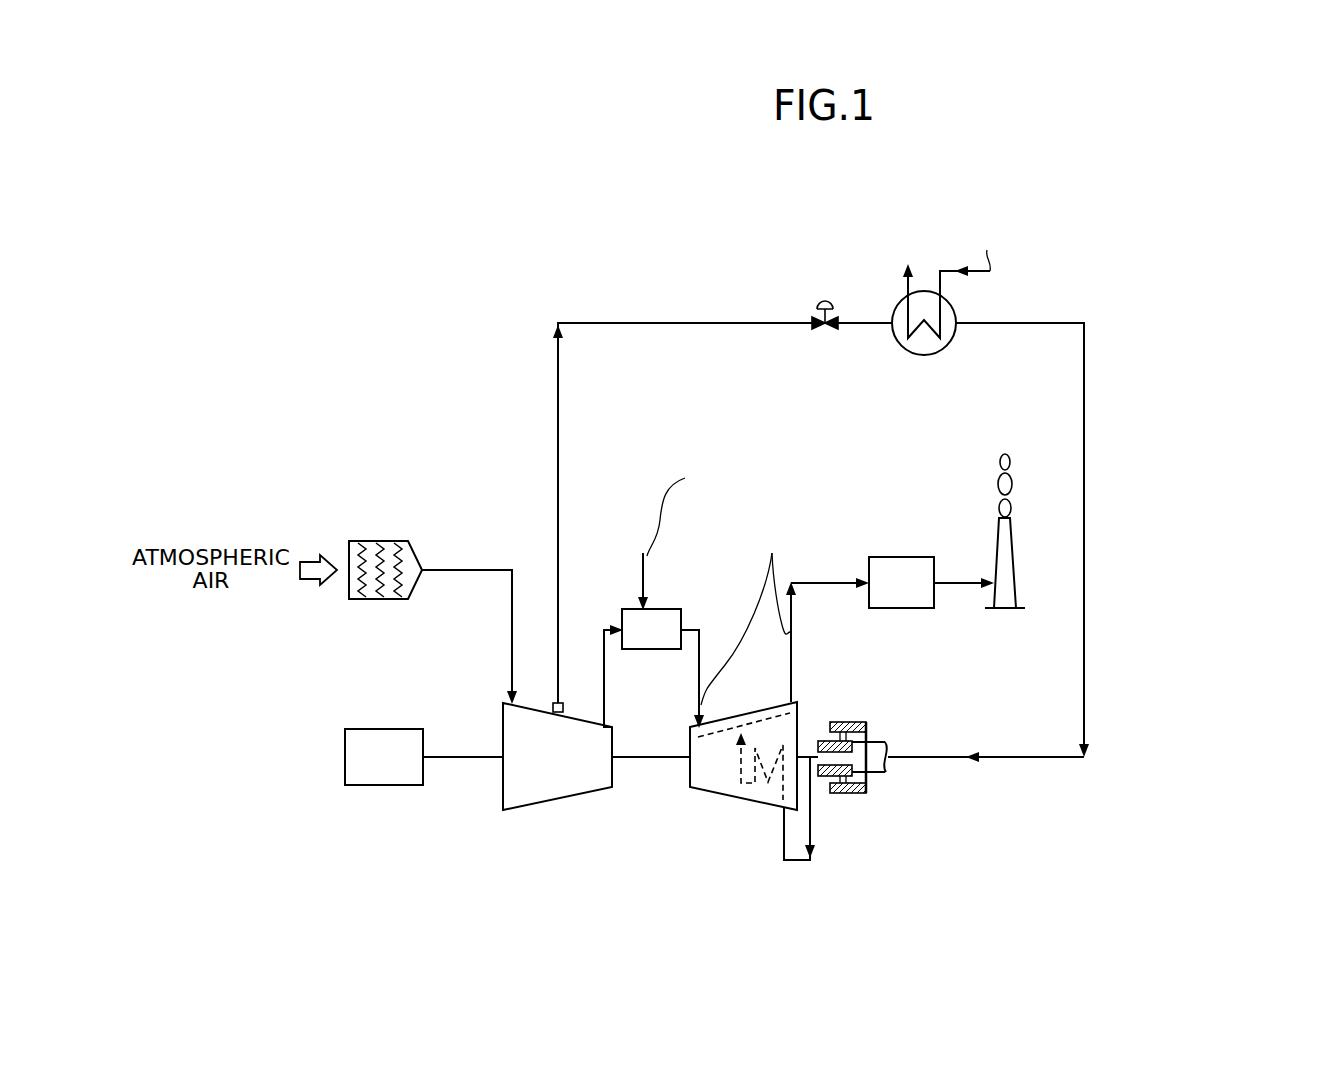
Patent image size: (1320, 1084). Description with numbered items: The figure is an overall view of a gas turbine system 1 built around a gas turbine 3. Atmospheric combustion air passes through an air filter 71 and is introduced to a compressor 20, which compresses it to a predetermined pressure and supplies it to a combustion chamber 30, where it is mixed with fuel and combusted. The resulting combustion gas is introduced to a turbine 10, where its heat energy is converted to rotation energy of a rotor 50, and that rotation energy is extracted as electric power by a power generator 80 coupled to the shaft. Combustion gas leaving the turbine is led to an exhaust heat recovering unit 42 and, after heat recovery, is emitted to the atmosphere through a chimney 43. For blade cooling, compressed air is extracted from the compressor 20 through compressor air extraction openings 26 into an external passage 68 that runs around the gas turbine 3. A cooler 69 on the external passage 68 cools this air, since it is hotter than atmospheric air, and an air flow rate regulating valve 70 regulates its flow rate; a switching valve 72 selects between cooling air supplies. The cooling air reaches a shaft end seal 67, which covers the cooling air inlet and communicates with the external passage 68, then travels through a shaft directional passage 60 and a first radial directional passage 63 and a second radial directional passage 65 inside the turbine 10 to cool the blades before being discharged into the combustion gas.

The gas turbine system 1 is at (1212, 218).
The gas turbine 3 is at (642, 705).
The turbine 10 is at (713, 792).
The compressor 20 is at (503, 710).
The compressor air extraction openings 26 is at (563, 705).
The combustion chamber 30 is at (663, 608).
The exhaust heat recovering unit 42 is at (903, 557).
The chimney 43 is at (1013, 565).
The rotor 50 is at (852, 758).
The shaft directional passage 60 is at (795, 862).
The first radial directional passage 63 is at (752, 839).
The second radial directional passage 65 is at (759, 788).
The shaft end seal 67 is at (858, 794).
The external passage 68 is at (1085, 383).
The cooler 69 is at (950, 352).
The air flow rate regulating valve 70 is at (828, 333).
The air filter 71 is at (378, 541).
The switching valve 72 is at (558, 641).
The power generator 80 is at (375, 787).